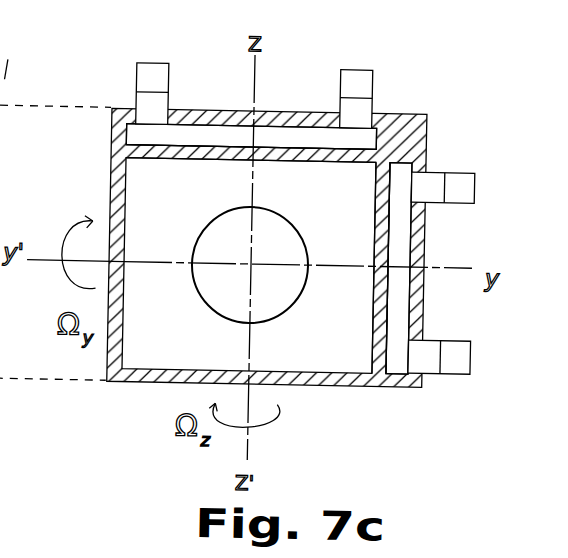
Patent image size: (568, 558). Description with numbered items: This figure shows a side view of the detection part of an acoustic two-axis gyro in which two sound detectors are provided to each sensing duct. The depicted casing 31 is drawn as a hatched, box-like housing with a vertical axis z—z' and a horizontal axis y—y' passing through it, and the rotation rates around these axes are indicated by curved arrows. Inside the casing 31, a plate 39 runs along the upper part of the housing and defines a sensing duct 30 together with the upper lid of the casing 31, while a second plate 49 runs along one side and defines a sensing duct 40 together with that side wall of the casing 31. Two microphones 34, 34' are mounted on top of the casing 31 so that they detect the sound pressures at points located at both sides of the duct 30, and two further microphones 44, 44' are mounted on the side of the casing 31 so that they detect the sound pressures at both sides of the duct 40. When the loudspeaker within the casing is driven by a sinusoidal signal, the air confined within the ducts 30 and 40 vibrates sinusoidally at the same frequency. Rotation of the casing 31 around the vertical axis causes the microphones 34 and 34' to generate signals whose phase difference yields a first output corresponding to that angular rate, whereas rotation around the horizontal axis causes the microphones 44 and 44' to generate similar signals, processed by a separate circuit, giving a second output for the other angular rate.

The sensing duct 30 is at (220, 134).
The casing 31 is at (417, 114).
The microphone 34 is at (386, 97).
The microphone 34' is at (126, 85).
The plate 39 is at (180, 158).
The sensing duct 40 is at (395, 247).
The microphone 44 is at (445, 330).
The microphone 44' is at (470, 169).
The plate 49 is at (375, 181).